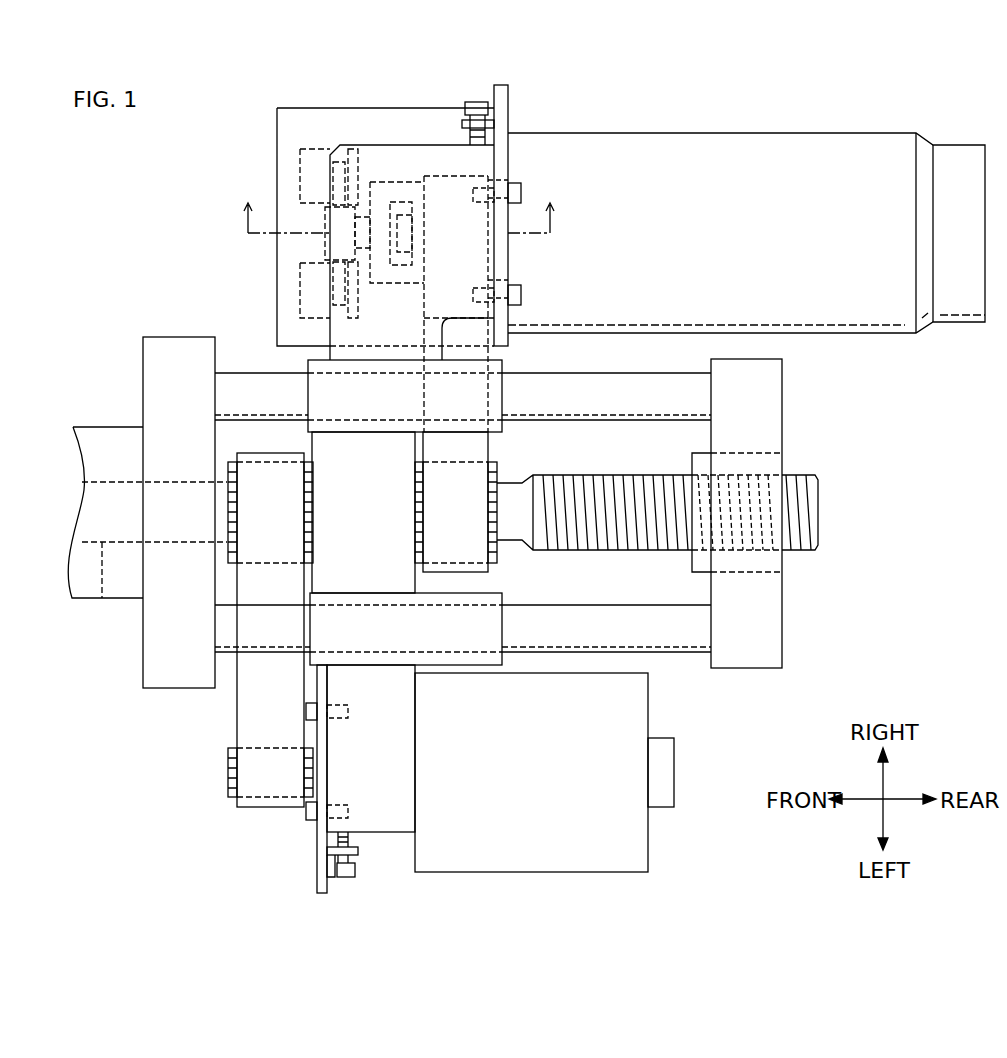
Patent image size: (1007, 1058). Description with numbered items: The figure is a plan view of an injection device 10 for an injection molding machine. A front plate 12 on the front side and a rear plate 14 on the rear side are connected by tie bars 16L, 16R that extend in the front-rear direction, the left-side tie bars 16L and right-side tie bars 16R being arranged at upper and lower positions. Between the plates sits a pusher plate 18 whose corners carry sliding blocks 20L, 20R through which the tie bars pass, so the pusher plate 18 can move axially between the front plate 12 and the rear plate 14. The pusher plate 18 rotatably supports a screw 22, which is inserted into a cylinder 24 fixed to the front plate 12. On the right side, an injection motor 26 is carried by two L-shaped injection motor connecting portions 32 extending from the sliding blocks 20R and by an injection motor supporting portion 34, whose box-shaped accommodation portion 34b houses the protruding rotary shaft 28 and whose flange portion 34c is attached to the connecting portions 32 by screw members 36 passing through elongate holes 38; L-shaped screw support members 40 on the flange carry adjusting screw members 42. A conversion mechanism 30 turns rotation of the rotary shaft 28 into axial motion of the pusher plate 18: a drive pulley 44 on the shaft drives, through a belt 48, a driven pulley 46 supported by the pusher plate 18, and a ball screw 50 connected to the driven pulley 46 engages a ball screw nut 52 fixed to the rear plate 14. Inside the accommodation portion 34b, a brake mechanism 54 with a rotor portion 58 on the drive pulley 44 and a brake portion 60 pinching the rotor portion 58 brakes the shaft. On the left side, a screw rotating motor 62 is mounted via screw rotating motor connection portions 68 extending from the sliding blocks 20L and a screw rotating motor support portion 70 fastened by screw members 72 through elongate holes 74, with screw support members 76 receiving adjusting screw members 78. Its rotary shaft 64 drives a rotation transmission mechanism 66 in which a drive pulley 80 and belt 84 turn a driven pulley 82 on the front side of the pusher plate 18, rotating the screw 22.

The injection device 10 is at (160, 146).
The front plate 12 is at (172, 336).
The rear plate 14 is at (745, 655).
The right-side tie bar 16R is at (603, 385).
The left-side tie bar 16L is at (603, 615).
The pusher plate 18 is at (360, 585).
The right-side sliding block 20R is at (496, 390).
The left-side sliding block 20L is at (500, 622).
The screw 22 is at (102, 600).
The cylinder 24 is at (108, 426).
The injection motor 26 is at (753, 133).
The rotary shaft 28 is at (500, 241).
The conversion mechanism 30 is at (460, 590).
The injection motor connecting portion 32 is at (385, 152).
The injection motor supporting portion 34 is at (452, 104).
The accommodation portion 34b is at (285, 116).
The flange portion 34c is at (509, 96).
The screw member 36 is at (523, 193).
The elongate hole 38 is at (500, 180).
The screw support member 40 is at (497, 102).
The adjusting screw member 42 is at (470, 106).
The drive pulley 44 is at (418, 300).
The driven pulley 46 is at (499, 468).
The belt 48 is at (474, 452).
The ball screw 50 is at (630, 475).
The ball screw nut 52 is at (747, 573).
The brake mechanism 54 is at (286, 150).
The rotor portion 58 is at (322, 242).
The brake portion 60 is at (298, 192).
The screw rotating motor 62 is at (640, 845).
The rotary shaft 64 is at (314, 766).
The rotation transmission mechanism 66 is at (223, 736).
The screw rotating motor connection portion 68 is at (400, 735).
The screw rotating motor support portion 70 is at (317, 848).
The screw member 72 is at (305, 710).
The elongate hole 74 is at (340, 707).
The screw support member 76 is at (330, 865).
The adjusting screw member 78 is at (347, 875).
The drive pulley 80 is at (228, 775).
The driven pulley 82 is at (228, 546).
The belt 84 is at (252, 683).